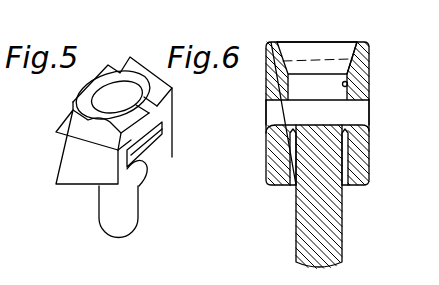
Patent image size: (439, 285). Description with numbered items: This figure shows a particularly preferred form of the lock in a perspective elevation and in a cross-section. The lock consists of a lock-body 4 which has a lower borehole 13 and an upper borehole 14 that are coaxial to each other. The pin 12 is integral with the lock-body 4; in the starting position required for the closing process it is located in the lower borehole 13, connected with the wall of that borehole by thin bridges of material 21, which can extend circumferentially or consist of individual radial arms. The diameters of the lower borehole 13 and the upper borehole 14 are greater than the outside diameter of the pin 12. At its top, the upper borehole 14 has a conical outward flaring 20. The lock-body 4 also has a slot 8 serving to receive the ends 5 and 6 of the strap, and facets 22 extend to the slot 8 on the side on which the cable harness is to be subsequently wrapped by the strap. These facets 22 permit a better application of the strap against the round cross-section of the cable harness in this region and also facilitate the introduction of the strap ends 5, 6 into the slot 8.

In FIG. 5, the lock-body 4 is at (165, 91).
In FIG. 6, the lock-body 4 is at (358, 91).
In FIG. 5, the end of the strap 5 is at (0, 153).
In FIG. 5, the end of the strap 6 is at (0, 198).
In FIG. 5, the slot 8 is at (145, 135).
In FIG. 6, the slot 8 is at (290, 112).
In FIG. 5, the pin 12 is at (127, 215).
In FIG. 6, the pin 12 is at (330, 230).
In FIG. 6, the lower borehole 13 is at (268, 172).
In FIG. 6, the upper borehole 14 is at (350, 76).
In FIG. 6, the conical outward flaring 20 is at (340, 47).
In FIG. 6, the bridges of material 21 is at (345, 128).
In FIG. 6, the facets 22 is at (272, 92).